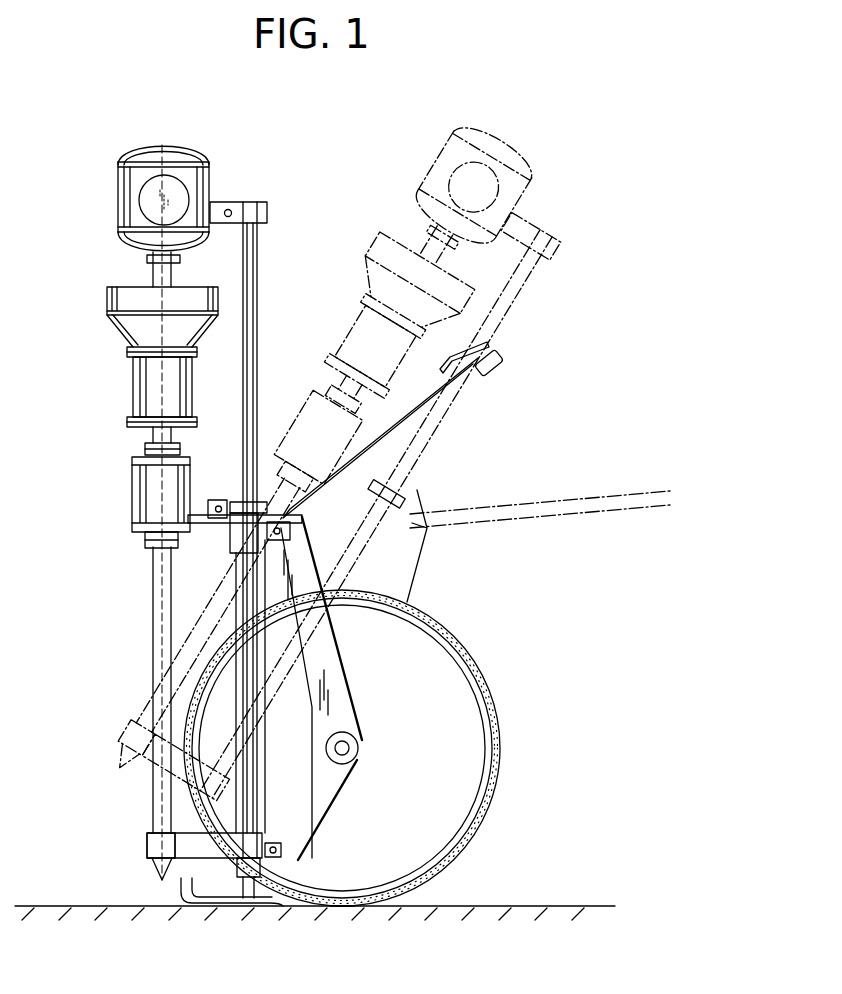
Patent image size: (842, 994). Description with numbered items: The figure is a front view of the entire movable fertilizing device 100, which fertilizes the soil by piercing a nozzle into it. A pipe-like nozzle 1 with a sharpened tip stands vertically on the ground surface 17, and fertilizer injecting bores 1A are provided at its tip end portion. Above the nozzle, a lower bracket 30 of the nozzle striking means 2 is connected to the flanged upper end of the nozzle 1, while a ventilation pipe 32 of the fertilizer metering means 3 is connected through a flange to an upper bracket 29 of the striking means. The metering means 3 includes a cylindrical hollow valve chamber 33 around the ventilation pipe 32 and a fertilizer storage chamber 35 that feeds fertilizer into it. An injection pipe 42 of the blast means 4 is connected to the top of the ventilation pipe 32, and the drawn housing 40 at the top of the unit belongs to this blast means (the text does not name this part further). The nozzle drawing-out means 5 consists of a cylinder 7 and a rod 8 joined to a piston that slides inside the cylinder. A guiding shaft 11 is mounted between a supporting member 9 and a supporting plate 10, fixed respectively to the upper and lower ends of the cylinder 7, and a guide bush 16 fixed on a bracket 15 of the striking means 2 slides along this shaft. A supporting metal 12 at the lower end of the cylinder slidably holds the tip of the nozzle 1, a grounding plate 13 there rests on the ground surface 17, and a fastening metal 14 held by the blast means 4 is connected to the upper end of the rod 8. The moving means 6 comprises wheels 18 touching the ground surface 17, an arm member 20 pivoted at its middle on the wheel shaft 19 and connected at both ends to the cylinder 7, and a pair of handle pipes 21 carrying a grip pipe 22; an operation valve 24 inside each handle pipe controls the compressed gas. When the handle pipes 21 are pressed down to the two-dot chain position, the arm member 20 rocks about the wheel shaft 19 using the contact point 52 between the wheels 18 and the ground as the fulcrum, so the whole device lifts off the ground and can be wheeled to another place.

The movable fertilizing device 100 is at (70, 445).
The nozzle 1 is at (153, 626).
The fertilizer injecting bores 1A is at (147, 846).
The nozzle striking means 2 is at (124, 502).
The fertilizer metering means 3 is at (124, 372).
The blast means 4 is at (105, 215).
The nozzle drawing-out means 5 is at (241, 456).
The moving means 6 is at (386, 748).
The cylinder 7 is at (306, 688).
The rod 8 is at (258, 352).
The supporting member 9 is at (230, 503).
The supporting plate 10 is at (252, 810).
The guiding shaft 11 is at (262, 733).
The supporting metal 12 is at (210, 858).
The grounding plate 13 is at (218, 907).
The fastening metal 14 is at (231, 209).
The bracket 15 is at (200, 523).
The guide bush 16 is at (240, 545).
The ground surface 17 is at (458, 912).
The wheels 18 is at (480, 832).
The wheel shaft 19 is at (358, 748).
The arm member 20 is at (346, 722).
The handle pipes 21 is at (415, 415).
The grip pipe 22 is at (505, 345).
The operation valve 24 is at (495, 369).
The upper bracket 29 is at (140, 468).
The lower bracket 30 is at (148, 540).
The ventilation pipe 32 is at (155, 440).
The valve chamber 33 is at (192, 380).
The fertilizer storage chamber 35 is at (133, 328).
The motor housing 40 is at (199, 150).
The injection pipe 42 is at (180, 259).
The point of contact 52 is at (345, 907).